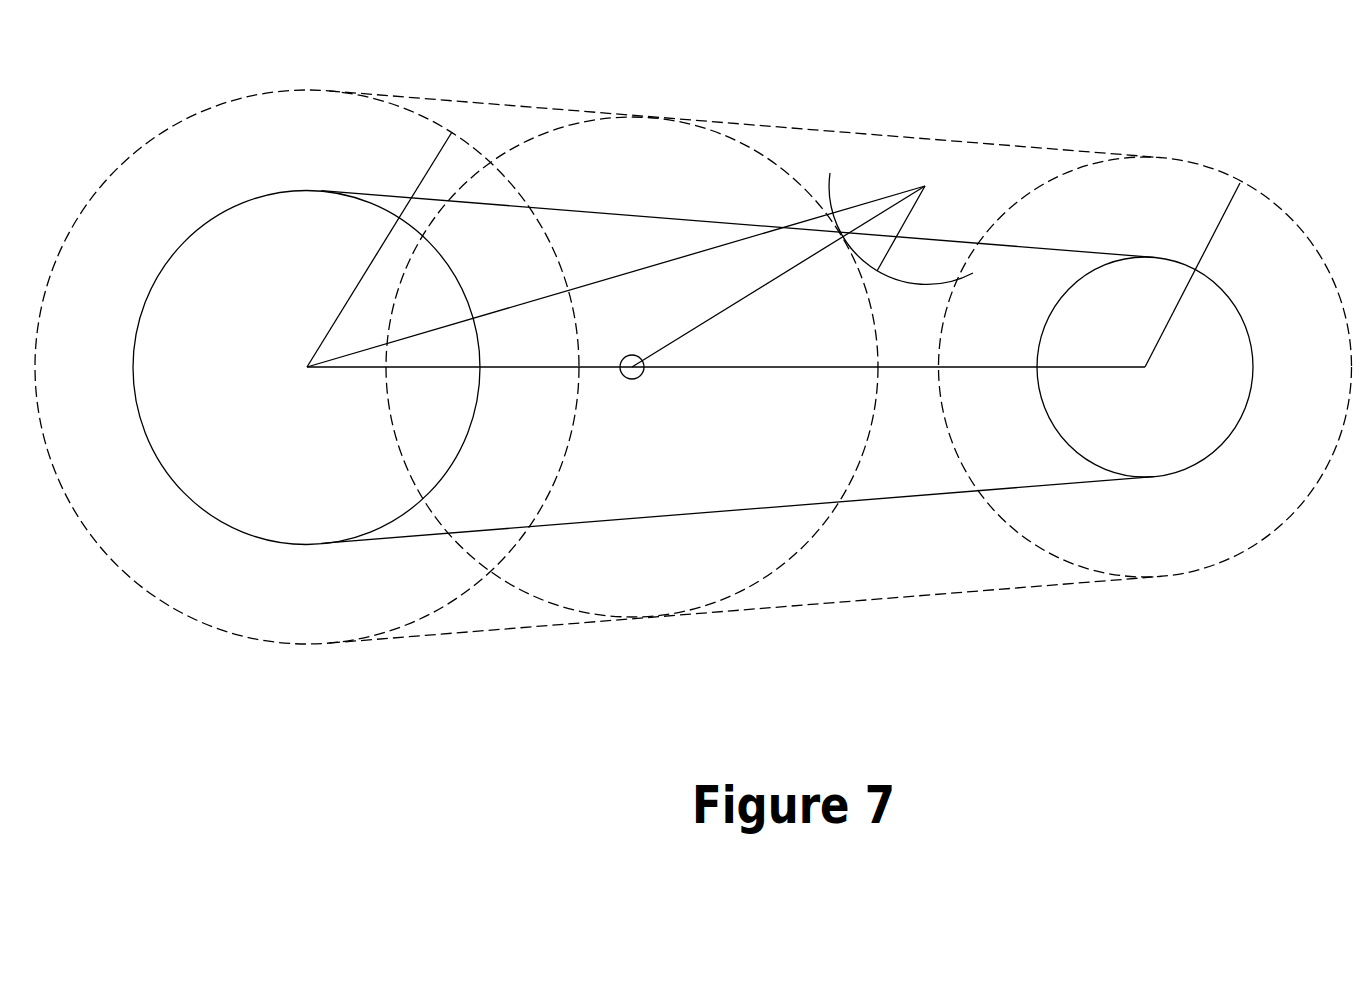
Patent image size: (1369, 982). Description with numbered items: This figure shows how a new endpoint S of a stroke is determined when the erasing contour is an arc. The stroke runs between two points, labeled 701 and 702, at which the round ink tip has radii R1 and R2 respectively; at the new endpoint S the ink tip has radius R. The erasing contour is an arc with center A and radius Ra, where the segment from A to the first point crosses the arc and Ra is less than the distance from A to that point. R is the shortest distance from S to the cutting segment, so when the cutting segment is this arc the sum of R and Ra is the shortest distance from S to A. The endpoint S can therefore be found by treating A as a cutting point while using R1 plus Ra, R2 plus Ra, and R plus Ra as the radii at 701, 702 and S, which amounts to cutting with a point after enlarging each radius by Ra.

The first pulley P1 701 is at (306, 368).
The second pulley P2 702 is at (1145, 367).
The new endpoint S is at (644, 390).
The radius of round ink tip at S R is at (655, 367).
The center of cutting arc A is at (640, 260).
The radius of round ink tip at P1 R1 is at (379, 249).
The radius of round ink tip at P2 R2 is at (1181, 275).
The radius of cutting arc Ra is at (827, 202).